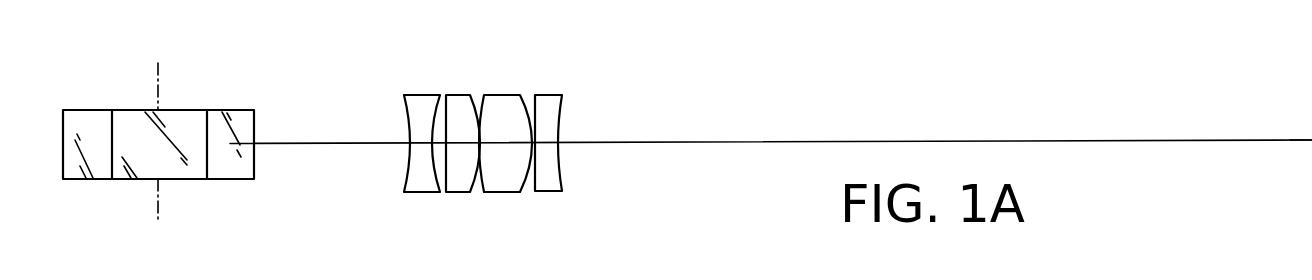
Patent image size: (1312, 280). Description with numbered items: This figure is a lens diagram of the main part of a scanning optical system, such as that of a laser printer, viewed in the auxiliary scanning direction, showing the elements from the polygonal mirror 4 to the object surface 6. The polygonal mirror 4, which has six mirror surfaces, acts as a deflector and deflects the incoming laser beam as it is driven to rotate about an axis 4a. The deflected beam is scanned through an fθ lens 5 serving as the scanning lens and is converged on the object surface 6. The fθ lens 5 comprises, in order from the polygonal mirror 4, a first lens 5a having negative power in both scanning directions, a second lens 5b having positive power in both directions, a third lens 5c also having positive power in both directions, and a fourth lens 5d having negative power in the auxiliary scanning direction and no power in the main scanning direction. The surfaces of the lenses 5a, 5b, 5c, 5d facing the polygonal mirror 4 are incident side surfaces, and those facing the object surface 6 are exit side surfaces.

The polygonal mirror 4 is at (192, 108).
The axis 4a is at (158, 84).
The fθ lens 5 is at (483, 96).
The first lens 5a is at (418, 100).
The second lens 5b is at (458, 100).
The third lens 5c is at (503, 100).
The fourth lens 5d is at (554, 120).
The object surface 6 is at (1311, 89).